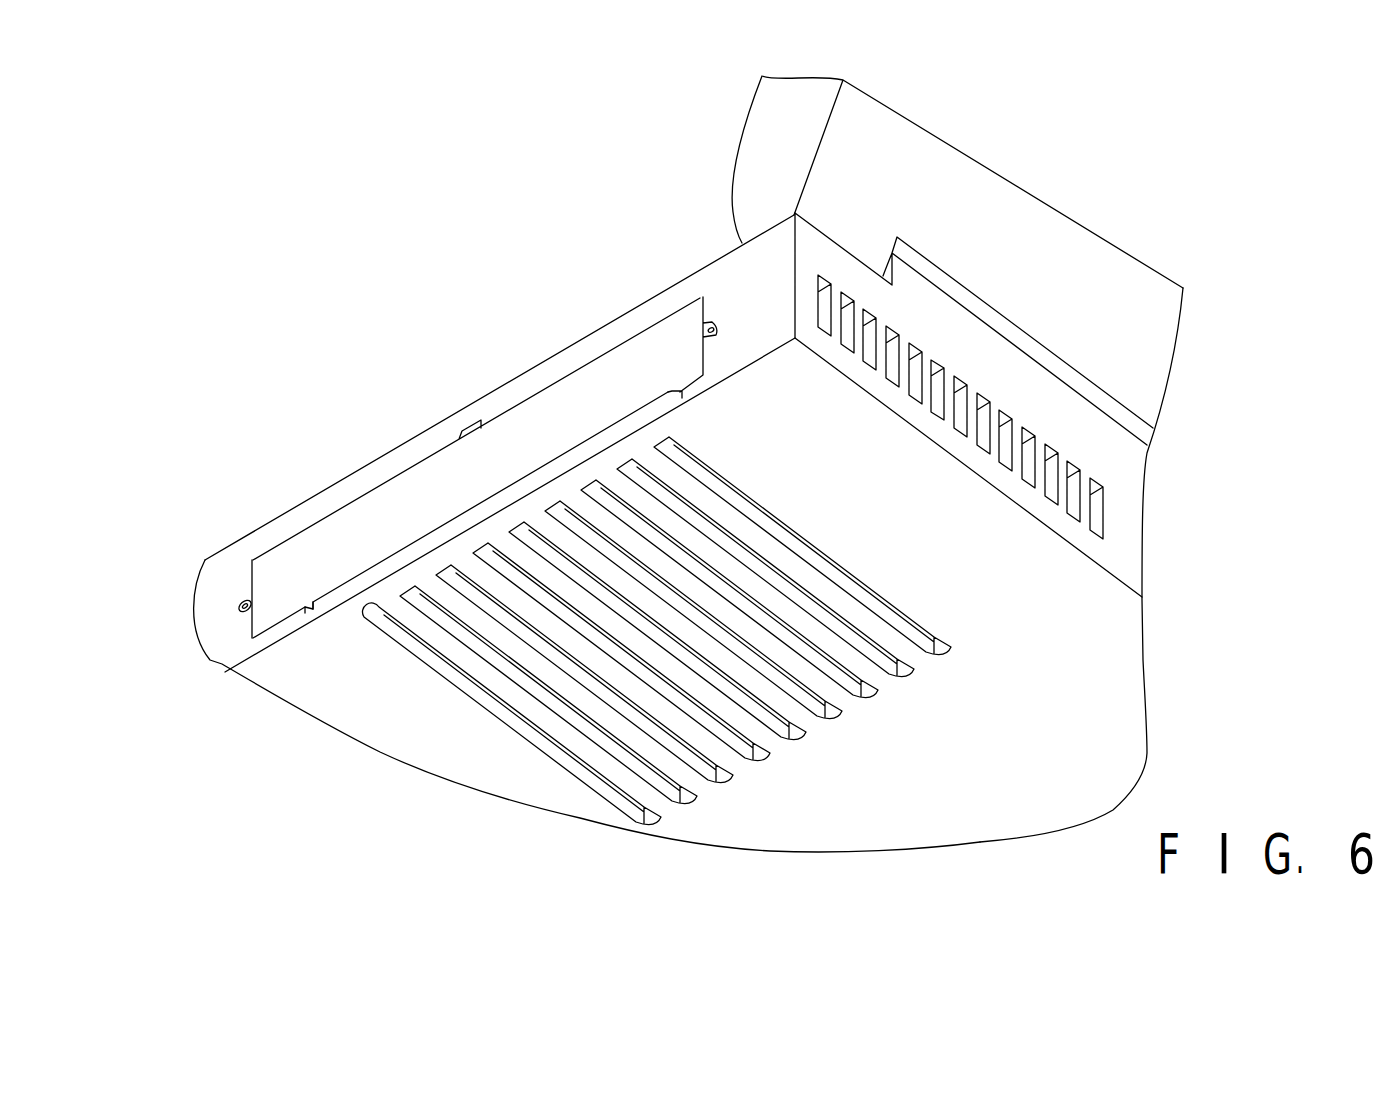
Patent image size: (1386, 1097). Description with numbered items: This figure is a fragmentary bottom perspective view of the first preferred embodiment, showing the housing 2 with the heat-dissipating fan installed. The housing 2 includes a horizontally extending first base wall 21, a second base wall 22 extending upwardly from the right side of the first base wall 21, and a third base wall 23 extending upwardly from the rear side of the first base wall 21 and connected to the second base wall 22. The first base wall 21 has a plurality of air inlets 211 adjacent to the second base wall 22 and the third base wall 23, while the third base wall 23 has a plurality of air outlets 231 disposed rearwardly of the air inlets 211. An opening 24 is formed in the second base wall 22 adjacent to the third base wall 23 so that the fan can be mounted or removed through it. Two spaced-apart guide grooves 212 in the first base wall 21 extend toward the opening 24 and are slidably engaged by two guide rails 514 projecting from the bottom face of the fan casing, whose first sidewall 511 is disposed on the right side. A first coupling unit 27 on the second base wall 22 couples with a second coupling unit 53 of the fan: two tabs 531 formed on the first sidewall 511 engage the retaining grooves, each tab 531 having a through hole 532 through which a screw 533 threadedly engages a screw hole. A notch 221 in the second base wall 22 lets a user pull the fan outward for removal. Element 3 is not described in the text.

The housing 2 is at (1152, 666).
The circuit board 3 is at (1097, 285).
The first base wall 21 is at (363, 703).
The second base wall 22 is at (218, 602).
The third base wall 23 is at (1120, 553).
The opening 24 is at (290, 539).
The first coupling unit 27 is at (237, 600).
The second coupling unit 53 is at (252, 601).
The air inlets 211 is at (512, 718).
The guide grooves 212 is at (682, 397).
The notch 221 is at (238, 612).
The air outlets 231 is at (1098, 517).
The first sidewall 511 is at (423, 505).
The guide rails 514 is at (673, 392).
The tabs 531 is at (237, 597).
The through hole 532 is at (250, 606).
The screws 533 is at (248, 610).